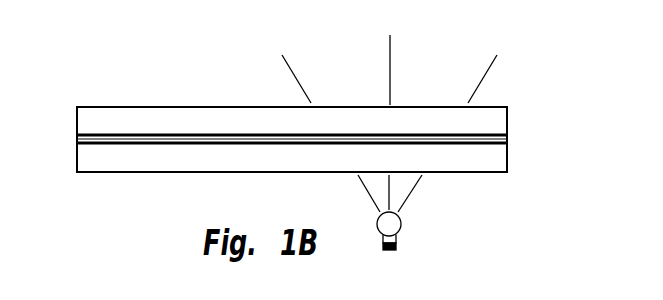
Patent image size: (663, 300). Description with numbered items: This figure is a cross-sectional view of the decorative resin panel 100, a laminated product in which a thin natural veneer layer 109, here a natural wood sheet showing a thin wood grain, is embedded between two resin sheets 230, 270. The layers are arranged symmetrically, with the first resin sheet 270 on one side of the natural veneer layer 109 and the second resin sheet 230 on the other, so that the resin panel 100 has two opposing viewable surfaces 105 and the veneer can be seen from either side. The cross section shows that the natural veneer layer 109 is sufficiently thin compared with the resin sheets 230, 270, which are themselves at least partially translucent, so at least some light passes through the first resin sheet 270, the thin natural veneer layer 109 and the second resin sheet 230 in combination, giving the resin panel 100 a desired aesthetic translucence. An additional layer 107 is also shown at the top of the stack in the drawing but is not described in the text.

The decorative resin panel 100 is at (71, 107).
The top layer (cover substrate) 107 is at (100, 107).
The second resin sheet 230 is at (507, 120).
The natural veneer layer 109 is at (507, 140).
The first resin sheet 270 is at (507, 157).
The viewable surfaces 105 is at (453, 62).